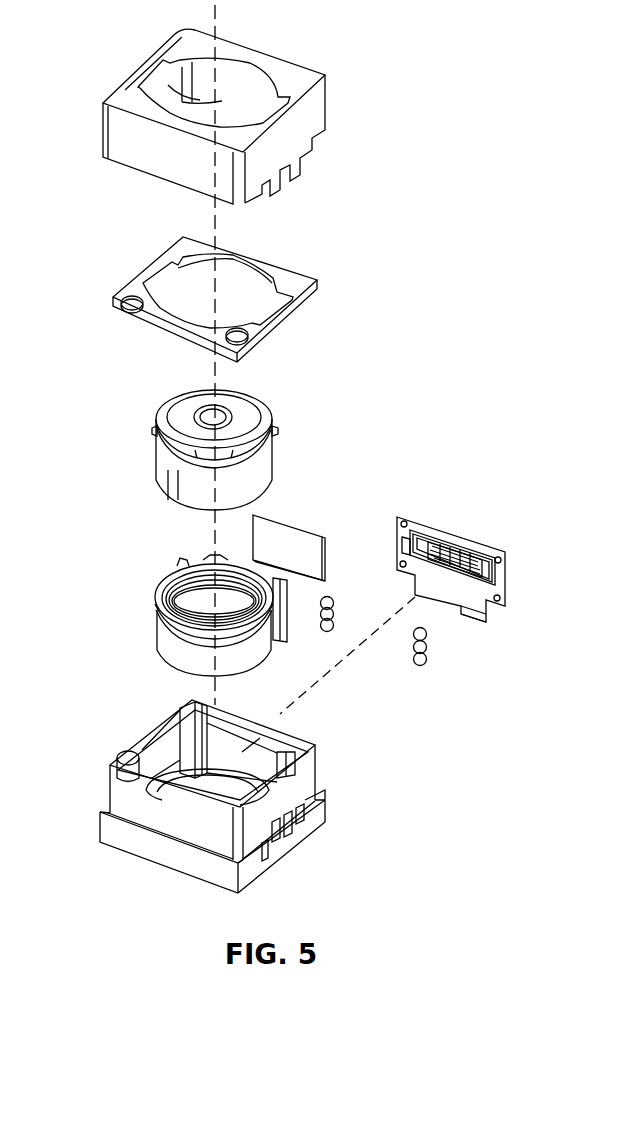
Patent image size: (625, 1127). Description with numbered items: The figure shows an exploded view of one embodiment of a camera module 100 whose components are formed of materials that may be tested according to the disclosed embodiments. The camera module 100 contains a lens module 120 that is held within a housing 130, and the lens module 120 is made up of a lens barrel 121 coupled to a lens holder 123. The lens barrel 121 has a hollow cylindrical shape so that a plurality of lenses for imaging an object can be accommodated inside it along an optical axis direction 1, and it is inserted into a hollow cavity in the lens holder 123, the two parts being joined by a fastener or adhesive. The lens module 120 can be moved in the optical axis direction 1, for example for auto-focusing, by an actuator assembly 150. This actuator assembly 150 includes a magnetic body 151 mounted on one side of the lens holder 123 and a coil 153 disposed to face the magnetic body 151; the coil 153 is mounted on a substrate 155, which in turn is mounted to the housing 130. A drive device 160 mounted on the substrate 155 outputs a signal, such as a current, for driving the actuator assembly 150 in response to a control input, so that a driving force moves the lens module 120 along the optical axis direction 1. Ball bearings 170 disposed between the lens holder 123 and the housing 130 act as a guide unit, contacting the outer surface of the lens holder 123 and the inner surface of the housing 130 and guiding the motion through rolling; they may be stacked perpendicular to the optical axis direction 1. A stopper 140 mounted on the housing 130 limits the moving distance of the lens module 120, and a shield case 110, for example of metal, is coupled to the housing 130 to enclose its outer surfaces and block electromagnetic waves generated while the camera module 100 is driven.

The camera module 100 is at (73, 25).
The optical axis direction 1 is at (215, 213).
The shield case 110 is at (313, 126).
The lens module 120 is at (72, 463).
The lens barrel 121 is at (158, 477).
The lens holder 123 is at (163, 645).
The housing 130 is at (303, 785).
The stopper 140 is at (290, 277).
The actuator assembly 150 is at (502, 487).
The magnetic body 151 is at (312, 547).
The coil 153 is at (425, 520).
The substrate 155 is at (488, 545).
The drive device 160 is at (462, 613).
The ball bearings 170 is at (413, 666).